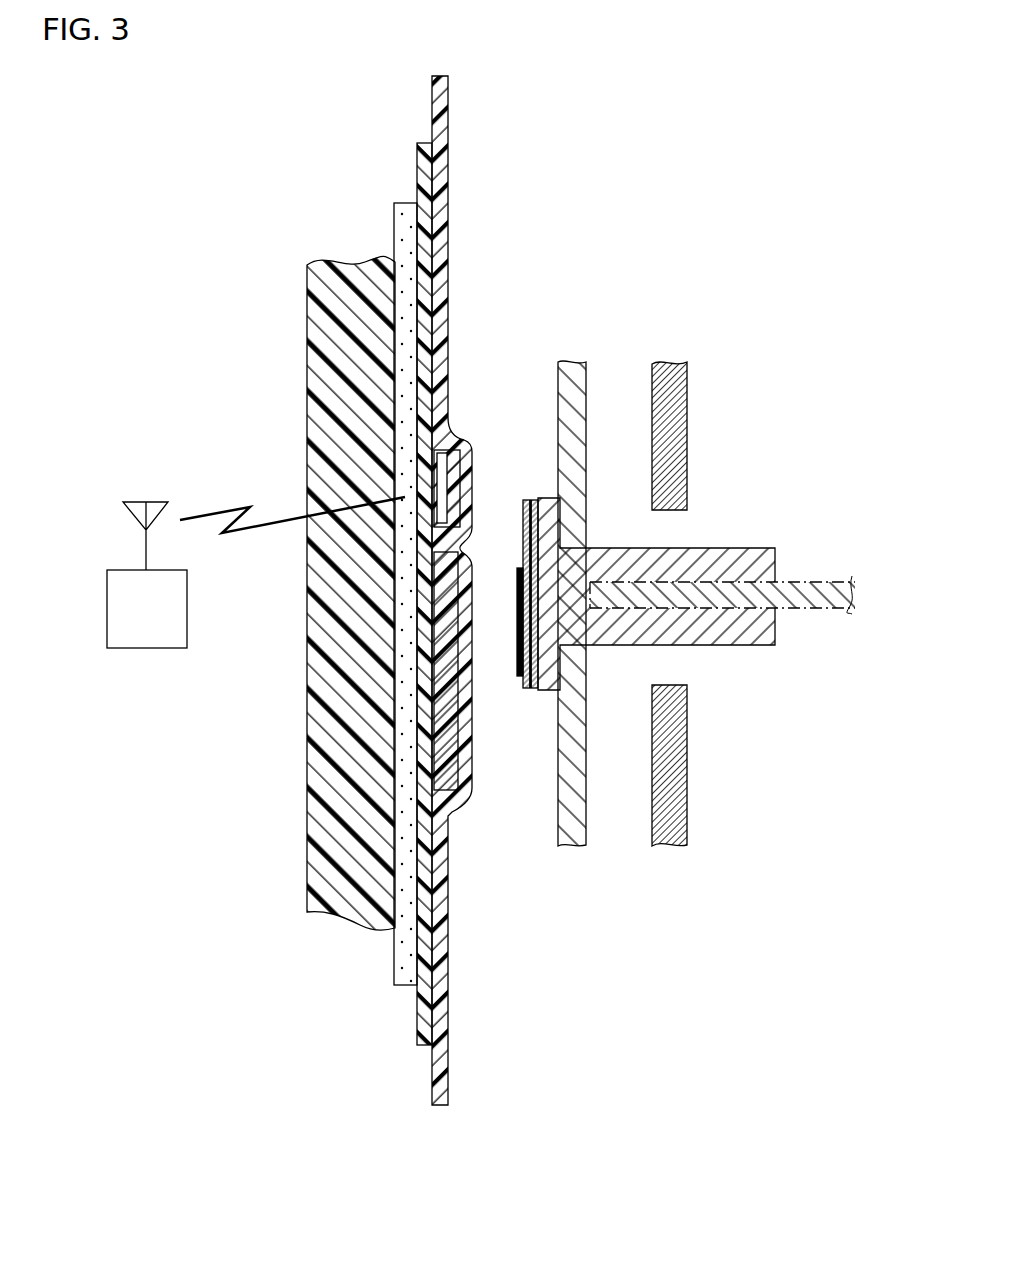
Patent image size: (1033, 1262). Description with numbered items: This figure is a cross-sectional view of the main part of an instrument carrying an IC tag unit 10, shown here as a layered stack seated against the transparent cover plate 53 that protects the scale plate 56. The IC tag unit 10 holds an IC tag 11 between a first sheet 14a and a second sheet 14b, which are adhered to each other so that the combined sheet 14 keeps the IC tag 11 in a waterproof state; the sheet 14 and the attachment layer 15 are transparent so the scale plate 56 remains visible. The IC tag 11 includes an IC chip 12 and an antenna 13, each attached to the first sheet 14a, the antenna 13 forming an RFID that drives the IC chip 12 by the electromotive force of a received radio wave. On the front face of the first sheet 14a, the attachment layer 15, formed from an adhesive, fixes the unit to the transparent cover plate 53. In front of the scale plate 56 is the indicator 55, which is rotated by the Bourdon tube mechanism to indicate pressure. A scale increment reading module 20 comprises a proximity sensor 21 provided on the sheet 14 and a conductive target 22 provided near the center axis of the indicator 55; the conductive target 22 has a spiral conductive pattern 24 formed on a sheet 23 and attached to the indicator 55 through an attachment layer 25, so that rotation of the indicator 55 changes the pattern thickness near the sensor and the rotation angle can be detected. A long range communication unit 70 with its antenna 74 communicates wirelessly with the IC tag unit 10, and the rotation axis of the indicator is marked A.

The IC tag unit 10 is at (334, 576).
The IC tag 11 is at (276, 562).
The IC chip 12 is at (437, 440).
The antenna 13 is at (428, 462).
The sheet 14 is at (337, 576).
The first sheet 14a is at (417, 166).
The second sheet 14b is at (432, 101).
The attachment layer 15 is at (394, 226).
The scale increment reading module 20 is at (659, 766).
The proximity sensor 21 is at (463, 798).
The conductive target 22 is at (612, 751).
The sheet 23 is at (523, 690).
The conductive pattern 24 is at (513, 680).
The attachment layer 25 is at (535, 690).
The transparent cover plate 53 is at (307, 873).
The indicator 55 is at (568, 360).
The scale plate 56 is at (687, 428).
The long range communication unit 70 is at (133, 650).
The antenna 74 is at (144, 500).
The center conductor / cable A is at (798, 582).